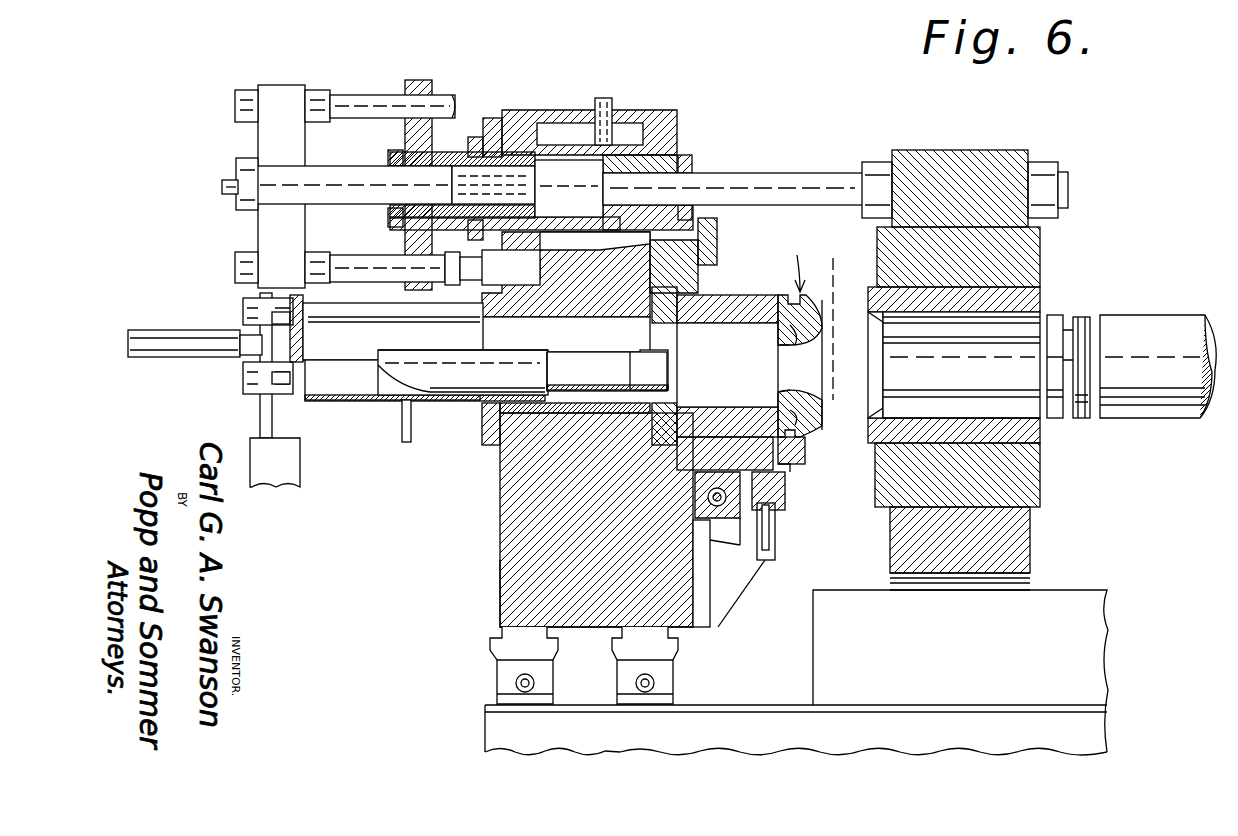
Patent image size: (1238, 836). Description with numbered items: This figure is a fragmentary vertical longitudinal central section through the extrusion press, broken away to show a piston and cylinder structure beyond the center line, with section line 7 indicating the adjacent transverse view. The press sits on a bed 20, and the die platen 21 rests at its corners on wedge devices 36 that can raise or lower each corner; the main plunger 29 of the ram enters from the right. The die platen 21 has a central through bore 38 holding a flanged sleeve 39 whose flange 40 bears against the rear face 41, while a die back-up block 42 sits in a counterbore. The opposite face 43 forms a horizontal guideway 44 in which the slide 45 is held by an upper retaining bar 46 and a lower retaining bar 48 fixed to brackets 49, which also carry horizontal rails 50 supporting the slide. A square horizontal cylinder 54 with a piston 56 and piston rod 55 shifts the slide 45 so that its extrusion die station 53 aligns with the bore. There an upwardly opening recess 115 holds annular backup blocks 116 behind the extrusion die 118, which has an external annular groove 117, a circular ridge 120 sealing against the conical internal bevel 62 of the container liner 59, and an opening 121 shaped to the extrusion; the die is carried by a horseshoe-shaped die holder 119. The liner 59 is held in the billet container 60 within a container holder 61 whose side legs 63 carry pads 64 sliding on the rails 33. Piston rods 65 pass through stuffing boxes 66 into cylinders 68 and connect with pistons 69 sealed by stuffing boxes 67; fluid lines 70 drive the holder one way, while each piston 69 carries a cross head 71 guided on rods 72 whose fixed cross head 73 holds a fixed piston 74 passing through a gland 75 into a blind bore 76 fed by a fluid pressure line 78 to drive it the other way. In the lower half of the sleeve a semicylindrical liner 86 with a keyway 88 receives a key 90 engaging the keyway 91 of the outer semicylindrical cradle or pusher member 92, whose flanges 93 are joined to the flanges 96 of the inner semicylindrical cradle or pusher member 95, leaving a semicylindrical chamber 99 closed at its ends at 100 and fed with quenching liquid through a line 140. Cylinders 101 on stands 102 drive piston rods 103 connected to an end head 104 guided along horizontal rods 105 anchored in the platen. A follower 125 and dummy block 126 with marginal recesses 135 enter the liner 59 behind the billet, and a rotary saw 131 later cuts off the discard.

The section line 7- 7 is at (857, 150).
The bed 20 is at (780, 712).
The die platen 21 is at (505, 585).
The main plunger 29 is at (1172, 412).
The rails 33 is at (1072, 650).
The wedge devices 36 is at (478, 665).
The central through bore 38 is at (520, 318).
The flanged sleeve 39 is at (575, 318).
The flange 40 is at (490, 445).
The rear face 41 is at (500, 538).
The die back-up block 42 is at (715, 378).
The face 43 is at (712, 612).
The horizontal guideway 44 is at (700, 274).
The slide 45 is at (806, 452).
The retaining bar 46 is at (718, 236).
The retaining bar 48 is at (786, 490).
The brackets 49 is at (730, 610).
The horizontal rails 50 is at (775, 512).
The extrusion die station 53 is at (793, 263).
The horizontal cylinder 54 is at (776, 540).
The piston rod 55 is at (748, 590).
The piston 56 is at (776, 560).
The container liner 59 is at (1015, 422).
The billet container 60 is at (1040, 242).
The container holder 61 is at (1030, 527).
The conical internal bevel 62 is at (885, 418).
The side legs 63 is at (985, 576).
The pads 64 is at (925, 584).
The piston rods 65 is at (830, 173).
The stuffing box 66 is at (688, 155).
The stuffing box 67 is at (475, 137).
The cylinder 68 is at (565, 123).
The piston 69 is at (569, 188).
The fluid line 70 is at (612, 100).
The cross head 71 is at (418, 80).
The rods 72 is at (345, 95).
The fixed cross head 73 is at (275, 88).
The fixed piston 74 is at (345, 172).
The stuffing box or gland 75 is at (395, 155).
The blind bore 76 is at (454, 182).
The fluid pressure line 78 is at (225, 182).
The semicylindrical liner 86 is at (632, 386).
The keyway 88 is at (670, 376).
The key 90 is at (470, 392).
The keyway 91 is at (450, 400).
The outer semicylindrical cradle or pusher member 92 is at (370, 400).
The flanges 93 is at (375, 318).
The inner semicylindrical cradle or pusher member 95 is at (604, 392).
The flanges 96 is at (452, 356).
The semicylindrical chamber 99 is at (526, 392).
The chamber end closures 100 is at (382, 415).
The cylinders 101 is at (152, 332).
The stands 102 is at (258, 400).
The piston rods 103 is at (278, 398).
The end head 104 is at (305, 300).
The horizontal rod 105 is at (243, 378).
The upwardly opening recess 115 is at (790, 402).
The annular backup blocks 116 is at (762, 405).
The external annular groove 117 is at (790, 298).
The extrusion die 118 is at (785, 330).
The die holder 119 is at (792, 470).
The circular ridge 120 is at (822, 300).
The opening 121 is at (790, 346).
The follower 125 is at (1055, 314).
The dummy block 126 is at (1108, 342).
The rotary saw 131 is at (835, 265).
The marginal recesses 135 is at (1085, 362).
The line 140 is at (408, 445).